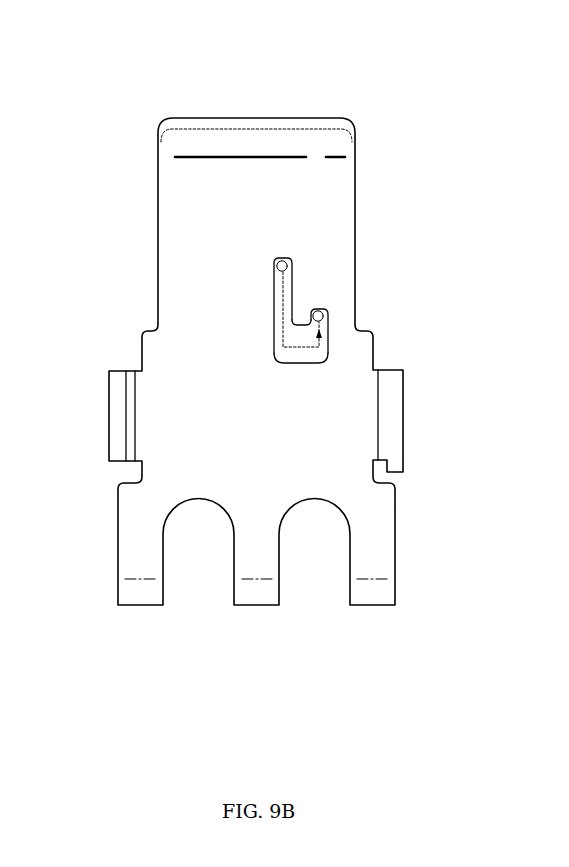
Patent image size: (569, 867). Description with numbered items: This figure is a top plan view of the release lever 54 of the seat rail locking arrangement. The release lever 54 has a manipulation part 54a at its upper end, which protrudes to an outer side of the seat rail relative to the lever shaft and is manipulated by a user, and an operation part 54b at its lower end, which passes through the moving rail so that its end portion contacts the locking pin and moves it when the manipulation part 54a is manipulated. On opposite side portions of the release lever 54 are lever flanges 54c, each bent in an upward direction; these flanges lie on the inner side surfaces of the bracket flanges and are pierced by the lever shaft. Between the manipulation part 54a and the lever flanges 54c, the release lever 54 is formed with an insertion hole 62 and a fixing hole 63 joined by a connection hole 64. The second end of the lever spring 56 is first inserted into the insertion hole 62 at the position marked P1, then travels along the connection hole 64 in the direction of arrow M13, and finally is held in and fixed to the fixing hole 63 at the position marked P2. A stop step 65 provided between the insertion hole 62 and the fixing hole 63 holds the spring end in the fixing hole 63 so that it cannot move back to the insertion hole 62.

The release lever 54 is at (136, 304).
The manipulation part 54a is at (247, 147).
The operation part 54b is at (260, 592).
The lever flanges 54c is at (118, 417).
The lever spring 56 is at (293, 256).
The insertion hole 62 is at (274, 258).
The fixing hole 63 is at (326, 308).
The connection hole 64 is at (303, 355).
The stop step 65 is at (300, 316).
The arrow M13 is at (295, 348).